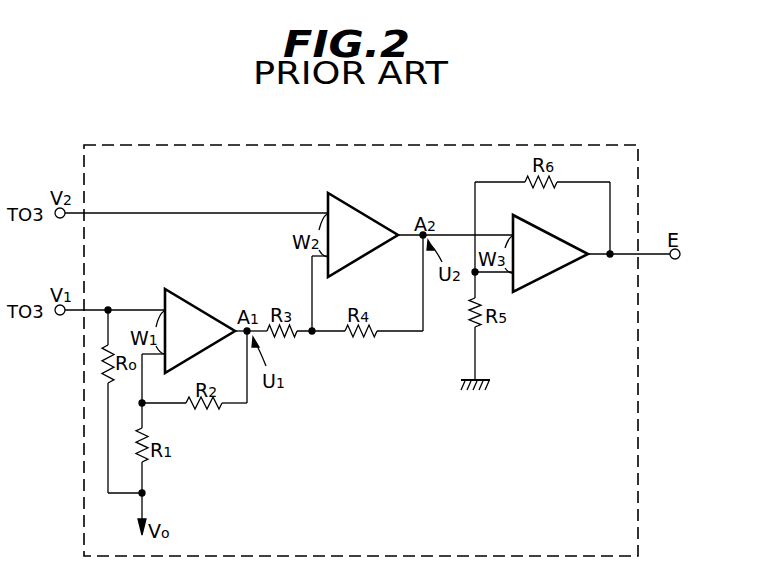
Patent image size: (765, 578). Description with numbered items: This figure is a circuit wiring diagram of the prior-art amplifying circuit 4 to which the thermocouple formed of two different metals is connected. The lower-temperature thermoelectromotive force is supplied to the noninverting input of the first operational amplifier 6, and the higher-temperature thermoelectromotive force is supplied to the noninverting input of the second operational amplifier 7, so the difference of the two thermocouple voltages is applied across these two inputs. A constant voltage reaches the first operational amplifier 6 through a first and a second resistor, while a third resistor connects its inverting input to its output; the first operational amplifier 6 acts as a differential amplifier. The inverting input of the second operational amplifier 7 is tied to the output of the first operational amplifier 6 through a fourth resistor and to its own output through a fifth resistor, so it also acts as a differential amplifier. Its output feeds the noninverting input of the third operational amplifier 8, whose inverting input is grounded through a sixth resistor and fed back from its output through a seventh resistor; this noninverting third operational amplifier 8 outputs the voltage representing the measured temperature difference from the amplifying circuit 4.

The amplifying circuit 4 is at (553, 145).
The first operational amplifier OP1 6 is at (197, 308).
The second operational amplifier OP2 7 is at (365, 215).
The third operational amplifier OP3 8 is at (556, 237).